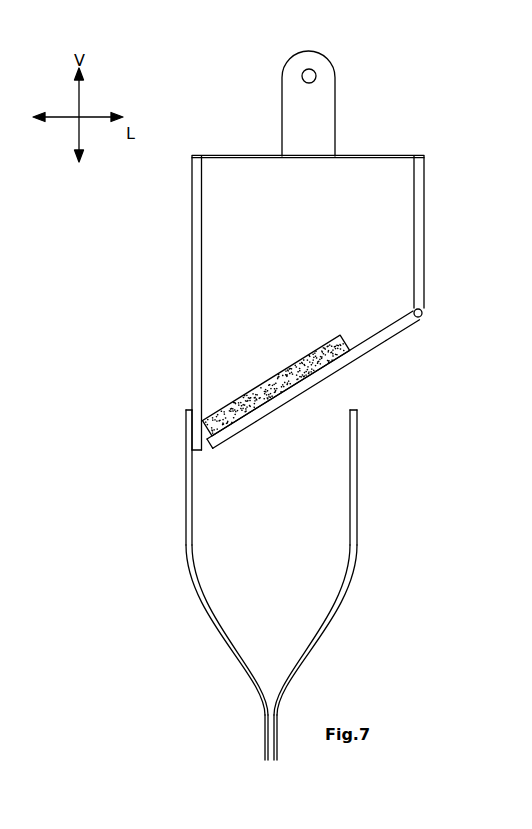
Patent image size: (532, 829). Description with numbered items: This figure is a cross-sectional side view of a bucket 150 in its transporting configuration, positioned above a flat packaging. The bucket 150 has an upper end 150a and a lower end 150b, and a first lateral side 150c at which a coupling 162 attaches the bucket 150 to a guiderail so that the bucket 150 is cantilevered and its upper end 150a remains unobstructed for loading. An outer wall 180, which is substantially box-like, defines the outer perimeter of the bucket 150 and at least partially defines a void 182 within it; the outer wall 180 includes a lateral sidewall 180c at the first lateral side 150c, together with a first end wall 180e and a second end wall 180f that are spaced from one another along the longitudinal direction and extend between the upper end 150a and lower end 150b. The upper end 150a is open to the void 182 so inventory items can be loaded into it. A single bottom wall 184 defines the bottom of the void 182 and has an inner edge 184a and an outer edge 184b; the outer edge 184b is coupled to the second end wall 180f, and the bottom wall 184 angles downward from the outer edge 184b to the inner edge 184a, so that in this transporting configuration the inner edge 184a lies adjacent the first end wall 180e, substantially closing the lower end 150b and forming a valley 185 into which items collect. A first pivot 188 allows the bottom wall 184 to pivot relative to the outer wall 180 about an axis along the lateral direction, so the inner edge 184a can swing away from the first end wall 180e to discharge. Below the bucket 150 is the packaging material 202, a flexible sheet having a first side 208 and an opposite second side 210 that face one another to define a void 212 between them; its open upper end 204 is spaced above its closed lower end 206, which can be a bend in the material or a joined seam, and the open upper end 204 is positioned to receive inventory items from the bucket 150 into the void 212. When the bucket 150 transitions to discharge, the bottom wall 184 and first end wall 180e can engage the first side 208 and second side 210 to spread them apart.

The bucket 150 is at (287, 414).
The upper end of bucket 150a is at (310, 276).
The lower end of bucket 150b is at (266, 593).
The first lateral side of bucket 150c is at (379, 185).
The coupling 162 is at (336, 78).
The outer wall 180 is at (310, 276).
The first lateral sidewall 180c is at (349, 190).
The first end wall 180e is at (192, 203).
The second end wall 180f is at (424, 193).
The void 182 is at (233, 203).
The bottom wall 184 is at (306, 399).
The inner edge of bottom wall 184a is at (212, 450).
The outer edge of bottom wall 184b is at (408, 327).
The valley 185 is at (207, 440).
The first pivot 188 is at (427, 312).
The packaging material 202 is at (279, 593).
The open upper end of packaging material 204 is at (372, 428).
The closed lower end of packaging material 206 is at (258, 760).
The first side of packaging material 208 is at (223, 653).
The second side of packaging material 210 is at (342, 610).
The void of packaging material 212 is at (288, 607).